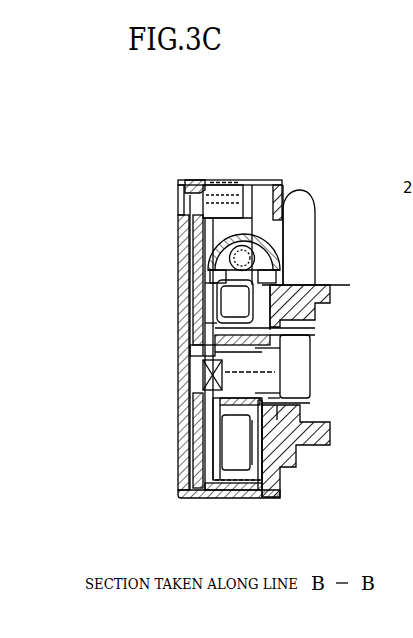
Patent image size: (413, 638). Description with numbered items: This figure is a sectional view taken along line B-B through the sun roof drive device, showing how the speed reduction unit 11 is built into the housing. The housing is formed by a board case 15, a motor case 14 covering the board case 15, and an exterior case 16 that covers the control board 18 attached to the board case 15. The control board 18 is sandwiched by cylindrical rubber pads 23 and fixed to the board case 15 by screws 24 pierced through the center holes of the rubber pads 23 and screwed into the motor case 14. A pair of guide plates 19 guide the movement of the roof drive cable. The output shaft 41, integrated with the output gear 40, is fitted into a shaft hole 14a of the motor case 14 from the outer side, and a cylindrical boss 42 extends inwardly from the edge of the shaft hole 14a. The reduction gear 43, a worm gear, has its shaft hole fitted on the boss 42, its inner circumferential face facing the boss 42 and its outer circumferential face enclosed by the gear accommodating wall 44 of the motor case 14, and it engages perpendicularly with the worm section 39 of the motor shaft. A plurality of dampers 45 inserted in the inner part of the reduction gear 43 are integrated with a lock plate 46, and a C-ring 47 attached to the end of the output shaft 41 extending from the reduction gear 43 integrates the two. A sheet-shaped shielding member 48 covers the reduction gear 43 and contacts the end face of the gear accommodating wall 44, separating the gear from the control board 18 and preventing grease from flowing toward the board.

The speed reduction unit 11 is at (264, 292).
The motor case 14 is at (315, 240).
The shaft hole 14a is at (290, 397).
The board case 15 is at (178, 238).
The exterior case 16 is at (274, 185).
The control board 18 is at (190, 275).
The guide plate 19 is at (327, 307).
The rubber pad 23 is at (203, 184).
The screw 24 is at (178, 191).
The worm section 39 is at (258, 238).
The output gear 40 is at (303, 369).
The output shaft 41 is at (300, 340).
The cylindrical boss 42 is at (192, 348).
The reduction gear 43 is at (262, 490).
The gear accommodating wall 44 is at (232, 490).
The damper 45 is at (236, 471).
The lock plate 46 is at (222, 430).
The C-ring 47 is at (205, 372).
The shielding member 48 is at (194, 301).